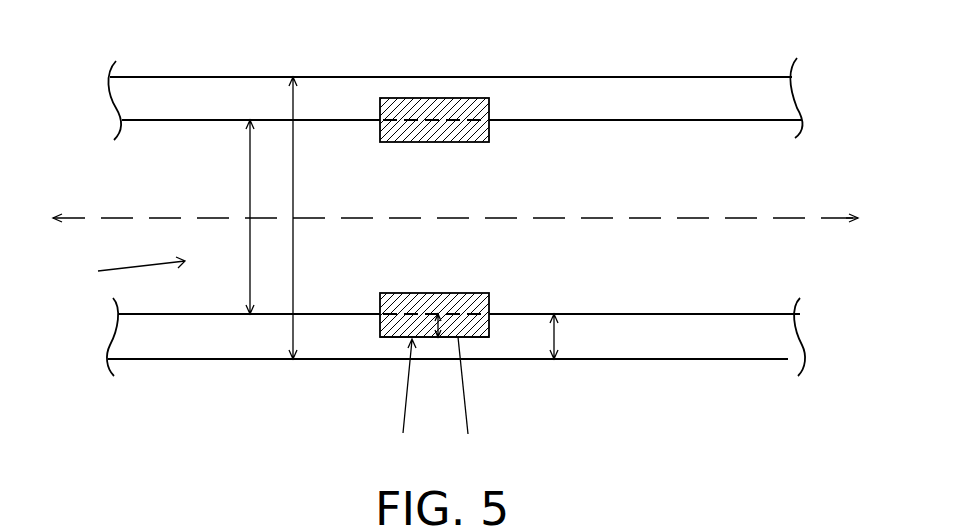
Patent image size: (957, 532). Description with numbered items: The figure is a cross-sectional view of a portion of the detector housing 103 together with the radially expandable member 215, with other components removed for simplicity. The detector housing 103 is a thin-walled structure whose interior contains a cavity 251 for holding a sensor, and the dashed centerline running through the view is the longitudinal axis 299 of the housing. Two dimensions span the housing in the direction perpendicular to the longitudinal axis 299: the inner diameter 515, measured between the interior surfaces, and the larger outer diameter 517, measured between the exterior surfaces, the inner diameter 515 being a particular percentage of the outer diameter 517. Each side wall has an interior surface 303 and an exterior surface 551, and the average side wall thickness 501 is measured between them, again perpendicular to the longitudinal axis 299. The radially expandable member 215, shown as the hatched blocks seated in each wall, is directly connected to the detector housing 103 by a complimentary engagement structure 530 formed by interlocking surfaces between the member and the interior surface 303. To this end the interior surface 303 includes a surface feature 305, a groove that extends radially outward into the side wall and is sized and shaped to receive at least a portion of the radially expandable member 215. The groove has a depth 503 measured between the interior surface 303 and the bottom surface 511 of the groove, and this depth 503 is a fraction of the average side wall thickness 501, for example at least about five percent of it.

The detector housing 103 is at (193, 93).
The interior surface 303 is at (619, 314).
The exterior surface 551 is at (728, 359).
The radially expandable member 215 is at (412, 142).
The surface feature 305 is at (392, 337).
The complimentary engagement structure 530 is at (403, 398).
The bottom surface 511 is at (468, 434).
The longitudinal axis 299 is at (108, 218).
The cavity 251 is at (122, 268).
The outer diameter 517 is at (293, 184).
The inner diameter 515 is at (250, 184).
The average side wall thickness 501 is at (554, 338).
The depth 503 is at (440, 318).